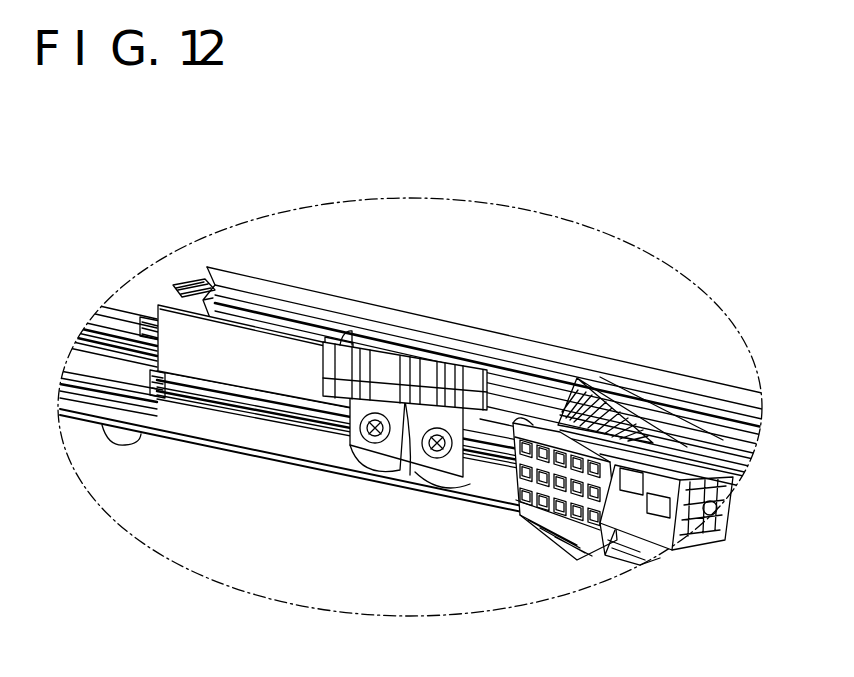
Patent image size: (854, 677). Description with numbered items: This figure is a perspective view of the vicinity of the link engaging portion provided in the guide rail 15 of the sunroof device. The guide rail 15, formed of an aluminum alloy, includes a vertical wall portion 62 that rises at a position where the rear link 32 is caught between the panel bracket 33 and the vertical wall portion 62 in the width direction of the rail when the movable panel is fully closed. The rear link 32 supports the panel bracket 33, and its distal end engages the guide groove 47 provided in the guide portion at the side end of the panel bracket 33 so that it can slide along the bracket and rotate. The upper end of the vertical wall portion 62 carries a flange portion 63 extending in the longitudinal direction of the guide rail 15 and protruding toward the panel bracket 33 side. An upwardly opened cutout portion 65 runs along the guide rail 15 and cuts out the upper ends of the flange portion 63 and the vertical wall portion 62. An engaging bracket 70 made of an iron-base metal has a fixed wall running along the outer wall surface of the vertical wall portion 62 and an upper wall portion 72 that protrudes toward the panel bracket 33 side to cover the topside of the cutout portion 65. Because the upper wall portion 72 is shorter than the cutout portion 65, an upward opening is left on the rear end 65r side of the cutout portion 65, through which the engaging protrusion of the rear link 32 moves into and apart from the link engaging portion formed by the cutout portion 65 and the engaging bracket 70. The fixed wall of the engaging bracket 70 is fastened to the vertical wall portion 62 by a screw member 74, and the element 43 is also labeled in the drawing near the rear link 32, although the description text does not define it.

The guide rail 15 is at (163, 437).
The rear link 32 is at (608, 397).
The panel bracket 33 is at (232, 277).
The connector housing 43 is at (643, 557).
The guide groove 47 is at (193, 280).
The vertical wall portion 62 is at (237, 373).
The flange portion 63 is at (170, 300).
The cutout portion 65 is at (323, 353).
The rear end of the cutout portion 65r is at (350, 330).
The engaging bracket 70 is at (477, 437).
The upper wall portion 72 is at (442, 347).
The screw member 74 is at (363, 453).